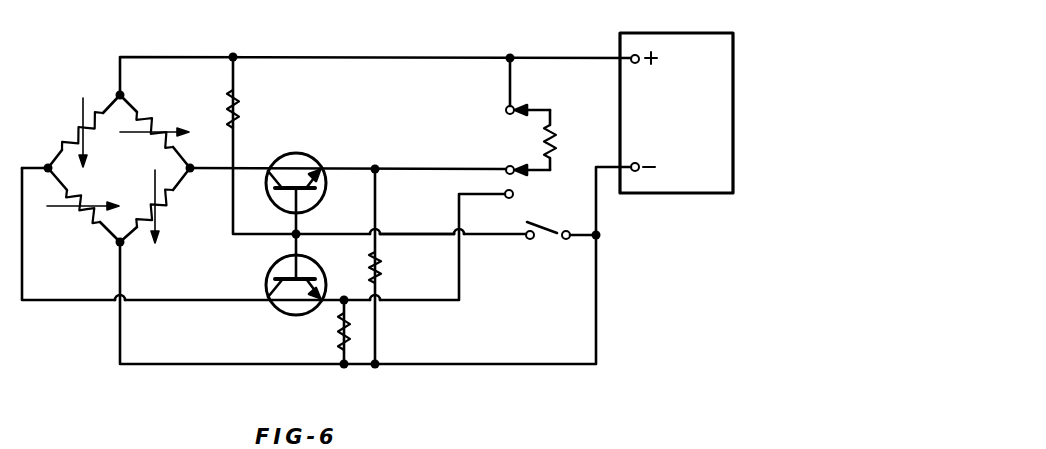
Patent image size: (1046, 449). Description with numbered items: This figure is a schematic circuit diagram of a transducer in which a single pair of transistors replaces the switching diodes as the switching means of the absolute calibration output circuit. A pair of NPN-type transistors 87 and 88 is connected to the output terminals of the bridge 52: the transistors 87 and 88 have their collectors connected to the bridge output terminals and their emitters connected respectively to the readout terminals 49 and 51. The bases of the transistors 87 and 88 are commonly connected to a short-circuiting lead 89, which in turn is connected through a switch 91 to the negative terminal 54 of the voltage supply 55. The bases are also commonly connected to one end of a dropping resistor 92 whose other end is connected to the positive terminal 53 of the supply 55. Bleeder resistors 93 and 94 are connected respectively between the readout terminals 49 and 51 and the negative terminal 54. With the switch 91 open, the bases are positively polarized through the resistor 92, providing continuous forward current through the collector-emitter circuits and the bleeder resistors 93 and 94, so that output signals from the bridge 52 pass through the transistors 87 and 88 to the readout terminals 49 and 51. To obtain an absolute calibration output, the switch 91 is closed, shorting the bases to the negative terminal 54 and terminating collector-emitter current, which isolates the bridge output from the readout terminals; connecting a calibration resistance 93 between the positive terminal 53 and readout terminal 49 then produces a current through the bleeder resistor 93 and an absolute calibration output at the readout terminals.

The bridge 52 is at (68, 119).
The dropping resistor 92 is at (239, 110).
The transistor 87 is at (305, 154).
The transistor 88 is at (268, 277).
The bleeder resistor 93 is at (381, 268).
The bleeder resistor 94 is at (336, 340).
The short-circuiting lead 89 is at (436, 214).
The readout terminal 49 is at (506, 167).
The readout terminal 51 is at (514, 196).
The switch 91 is at (548, 239).
The positive terminal 53 is at (638, 55).
The negative terminal 54 is at (641, 172).
The voltage supply 55 is at (705, 42).